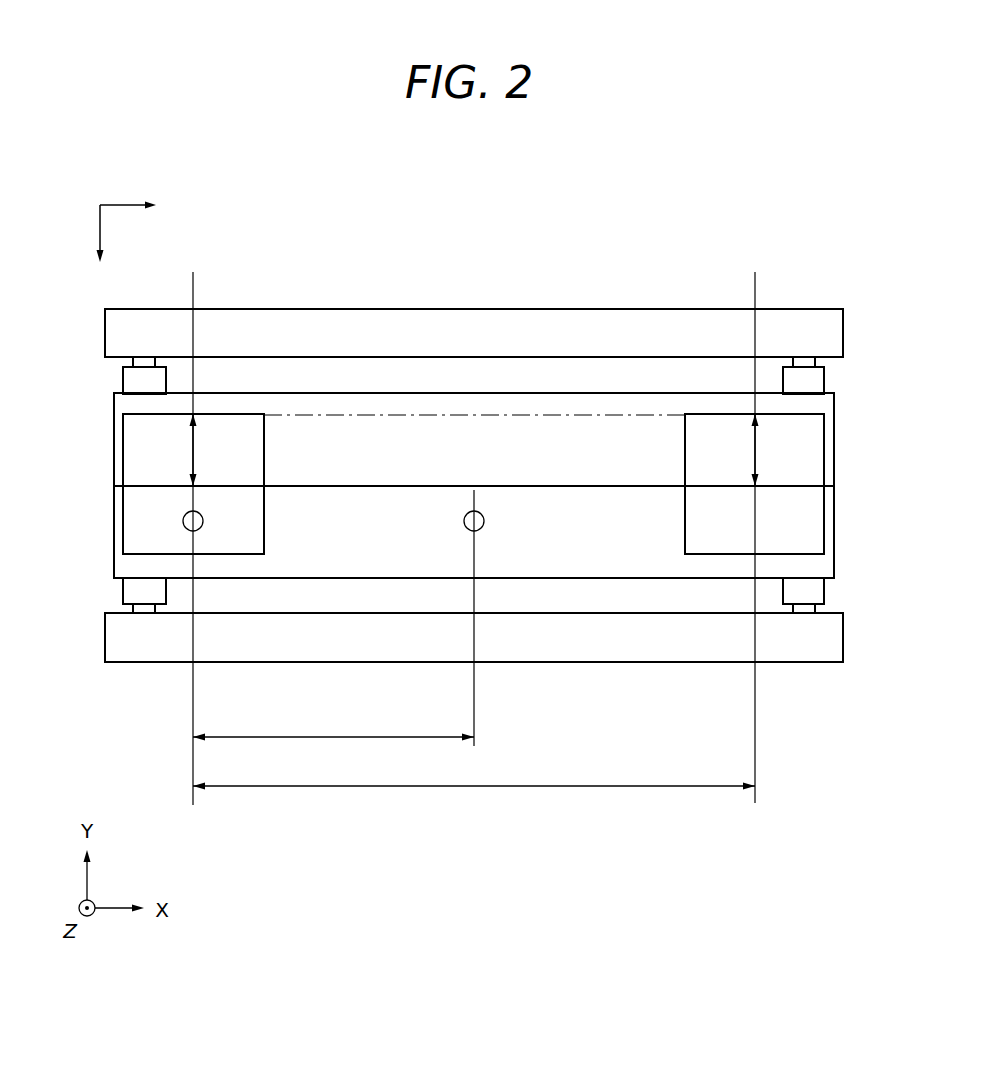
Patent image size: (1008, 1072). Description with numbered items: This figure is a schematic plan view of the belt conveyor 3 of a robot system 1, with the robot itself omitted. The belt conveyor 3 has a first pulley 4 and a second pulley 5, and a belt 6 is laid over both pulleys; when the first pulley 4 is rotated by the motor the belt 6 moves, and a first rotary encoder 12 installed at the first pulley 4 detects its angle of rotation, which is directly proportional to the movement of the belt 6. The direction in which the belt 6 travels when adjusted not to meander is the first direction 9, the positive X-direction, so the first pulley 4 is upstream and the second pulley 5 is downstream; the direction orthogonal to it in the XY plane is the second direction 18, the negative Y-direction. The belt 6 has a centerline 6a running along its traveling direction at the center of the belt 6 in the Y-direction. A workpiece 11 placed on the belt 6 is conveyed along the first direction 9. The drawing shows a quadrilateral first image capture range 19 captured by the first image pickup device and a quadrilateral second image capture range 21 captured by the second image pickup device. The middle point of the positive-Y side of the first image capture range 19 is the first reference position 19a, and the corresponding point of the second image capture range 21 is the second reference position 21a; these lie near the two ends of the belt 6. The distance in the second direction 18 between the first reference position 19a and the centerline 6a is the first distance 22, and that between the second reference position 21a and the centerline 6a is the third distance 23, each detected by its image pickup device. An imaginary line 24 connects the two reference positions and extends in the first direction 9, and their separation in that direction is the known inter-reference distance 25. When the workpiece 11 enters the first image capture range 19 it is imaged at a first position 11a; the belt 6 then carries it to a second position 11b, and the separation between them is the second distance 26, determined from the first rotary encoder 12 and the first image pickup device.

The robot system 1 is at (830, 178).
The belt conveyor 3 is at (700, 309).
The first pulley 4 is at (93, 377).
The first rotary encoder 12 is at (123, 378).
The second pulley 5 is at (824, 378).
The belt 6 is at (648, 440).
The centerline 6a is at (565, 486).
The first direction 9 is at (127, 204).
The second direction 18 is at (100, 228).
The first image capture range 19 is at (127, 427).
The first reference position 19a is at (192, 524).
The second image capture range 21 is at (820, 424).
The second reference position 21a is at (754, 523).
The first distance 22 is at (185, 452).
The third distance 23 is at (758, 452).
The imaginary line 24 is at (388, 415).
The inter-reference distance 25 is at (617, 785).
The second distance 26 is at (335, 736).
The workpiece 11 is at (401, 521).
The first position 11a is at (203, 519).
The second position 11b is at (484, 519).